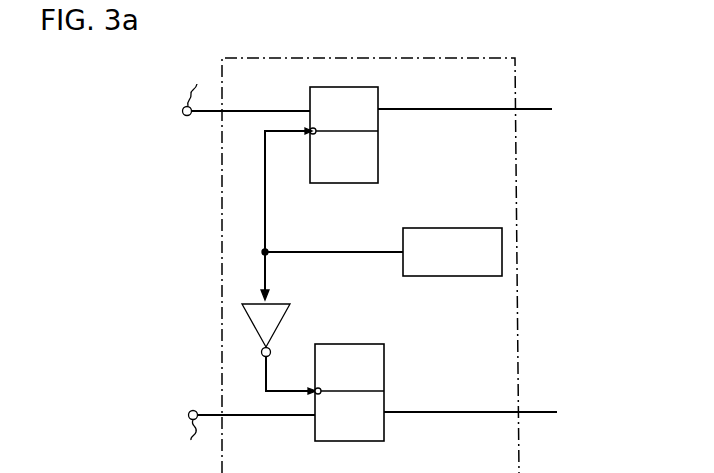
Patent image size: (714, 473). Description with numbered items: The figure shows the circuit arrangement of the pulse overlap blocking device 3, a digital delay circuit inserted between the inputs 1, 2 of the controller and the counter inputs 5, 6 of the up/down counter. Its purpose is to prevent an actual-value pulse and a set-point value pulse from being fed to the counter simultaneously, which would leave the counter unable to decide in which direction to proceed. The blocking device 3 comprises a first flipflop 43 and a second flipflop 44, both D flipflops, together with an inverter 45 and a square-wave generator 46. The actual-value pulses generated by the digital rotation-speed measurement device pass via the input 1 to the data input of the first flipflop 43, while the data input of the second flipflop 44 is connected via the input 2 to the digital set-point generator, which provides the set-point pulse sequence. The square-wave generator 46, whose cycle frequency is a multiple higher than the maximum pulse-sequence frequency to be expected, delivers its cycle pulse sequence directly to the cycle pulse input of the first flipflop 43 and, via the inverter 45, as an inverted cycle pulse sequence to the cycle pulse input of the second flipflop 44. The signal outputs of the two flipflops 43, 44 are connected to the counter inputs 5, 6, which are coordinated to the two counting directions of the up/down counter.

The input 1 is at (247, 94).
The input 2 is at (252, 433).
The pulse overlap blocking device 3 is at (463, 161).
The counter input 5 is at (472, 108).
The counter input 6 is at (477, 412).
The first flipflop 43 is at (340, 135).
The second flipflop 44 is at (349, 393).
The inverter 45 is at (288, 318).
The square-wave generator 46 is at (383, 252).